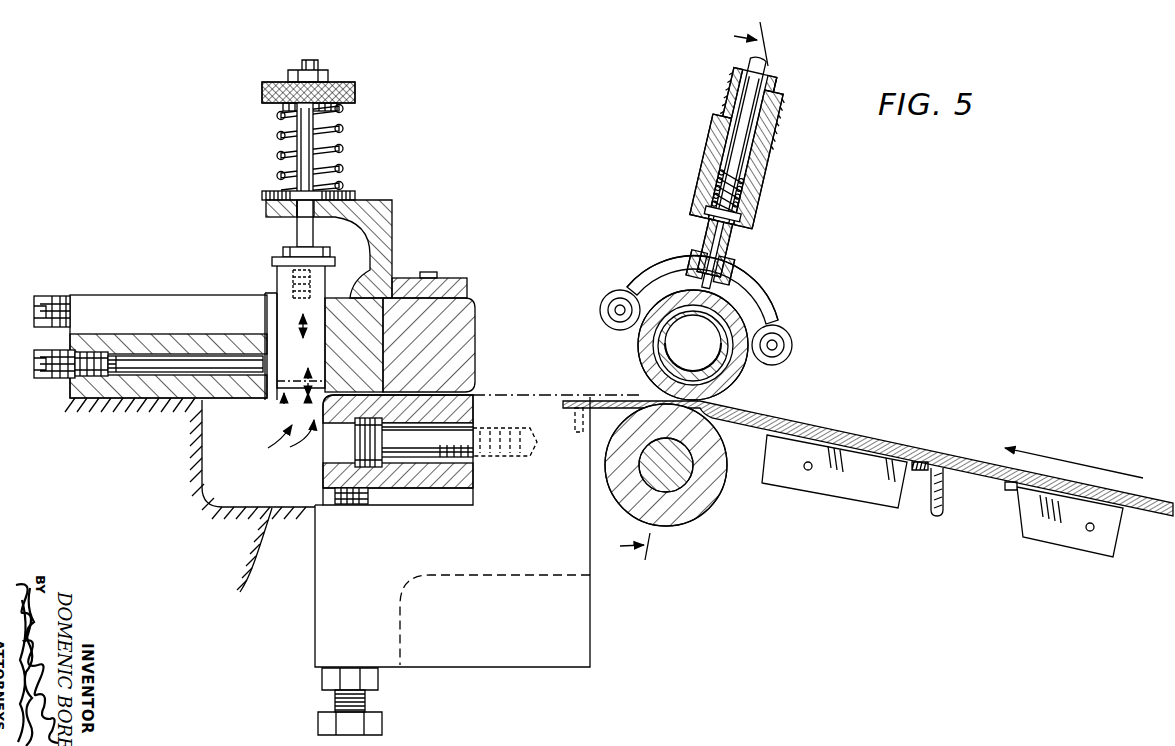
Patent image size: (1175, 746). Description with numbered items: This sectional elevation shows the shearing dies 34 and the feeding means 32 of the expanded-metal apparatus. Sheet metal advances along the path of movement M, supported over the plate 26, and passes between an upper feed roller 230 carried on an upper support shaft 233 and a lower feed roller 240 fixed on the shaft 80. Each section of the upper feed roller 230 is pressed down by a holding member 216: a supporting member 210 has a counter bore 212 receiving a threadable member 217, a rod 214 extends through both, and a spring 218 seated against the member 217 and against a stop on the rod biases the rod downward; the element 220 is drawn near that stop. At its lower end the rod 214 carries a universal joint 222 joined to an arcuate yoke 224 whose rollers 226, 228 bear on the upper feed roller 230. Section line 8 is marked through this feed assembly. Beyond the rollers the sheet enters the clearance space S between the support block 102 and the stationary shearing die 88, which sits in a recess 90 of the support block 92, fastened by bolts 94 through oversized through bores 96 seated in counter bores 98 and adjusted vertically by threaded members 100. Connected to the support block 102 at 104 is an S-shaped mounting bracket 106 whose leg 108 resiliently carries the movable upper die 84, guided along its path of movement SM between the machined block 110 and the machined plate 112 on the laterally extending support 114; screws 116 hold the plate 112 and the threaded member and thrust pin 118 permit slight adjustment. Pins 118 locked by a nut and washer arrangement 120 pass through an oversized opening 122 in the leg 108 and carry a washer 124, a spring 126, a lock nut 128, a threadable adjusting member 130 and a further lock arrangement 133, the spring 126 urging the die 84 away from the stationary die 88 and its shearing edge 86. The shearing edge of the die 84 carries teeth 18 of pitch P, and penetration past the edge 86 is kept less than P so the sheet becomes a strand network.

The upstanding pin 118 is at (317, 64).
The adjusting knob assembly 133 is at (350, 86).
The threadable adjusting member 130 is at (357, 104).
The lock nut 128 is at (290, 109).
The spring 126 is at (341, 127).
The washer 124 is at (350, 193).
The oversized opening 122 is at (310, 222).
The nut and washer arrangement 120 is at (282, 253).
The leg 108 is at (266, 212).
The S-shaped mounting bracket 106 is at (399, 221).
The accurately machined block 110 is at (362, 296).
The connection of mounting bracket to support block 104 is at (447, 280).
The support block 102 is at (476, 330).
The laterally extending support 114 is at (135, 294).
The metal screws 116 is at (60, 295).
The movable upper die 84 is at (277, 285).
The accurately machined plate 112 is at (270, 302).
The path of movement of movable die SM is at (300, 326).
The pitch P is at (306, 372).
The teeth 18 is at (288, 402).
The shearing dies 34 is at (265, 443).
The shearing edge 86 is at (301, 441).
The stationary shearing die 88 is at (330, 487).
The recess 90 is at (420, 503).
The bolts 94 is at (358, 448).
The oversized through bores 96 is at (478, 432).
The counter bores 98 is at (327, 507).
The support block 92 is at (591, 606).
The threaded members 100 is at (376, 703).
The clearance space S is at (482, 393).
The plate 26 is at (1000, 468).
The path of movement M is at (1086, 454).
The lower feed roller 240 is at (700, 515).
The shaft 80 is at (690, 470).
The upper feed roller 230 is at (744, 386).
The upper support shaft 233 is at (645, 355).
The holding member 216 is at (786, 308).
The arcuate yoke 224 is at (640, 276).
The feeding means 32 is at (773, 289).
The roller 228 is at (605, 300).
The roller 226 is at (797, 351).
The universal joint 222 is at (730, 258).
The counter bore 212 is at (758, 195).
The supporting member 210 is at (775, 152).
The threadable member 217 is at (727, 99).
The rod 214 is at (753, 58).
The spring 218 is at (708, 176).
The cross pin 220 is at (759, 216).
The section line 8- 8 is at (690, 296).